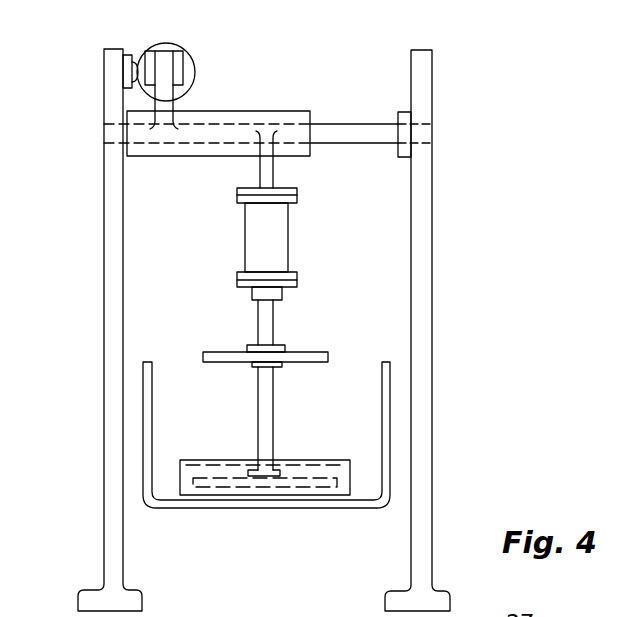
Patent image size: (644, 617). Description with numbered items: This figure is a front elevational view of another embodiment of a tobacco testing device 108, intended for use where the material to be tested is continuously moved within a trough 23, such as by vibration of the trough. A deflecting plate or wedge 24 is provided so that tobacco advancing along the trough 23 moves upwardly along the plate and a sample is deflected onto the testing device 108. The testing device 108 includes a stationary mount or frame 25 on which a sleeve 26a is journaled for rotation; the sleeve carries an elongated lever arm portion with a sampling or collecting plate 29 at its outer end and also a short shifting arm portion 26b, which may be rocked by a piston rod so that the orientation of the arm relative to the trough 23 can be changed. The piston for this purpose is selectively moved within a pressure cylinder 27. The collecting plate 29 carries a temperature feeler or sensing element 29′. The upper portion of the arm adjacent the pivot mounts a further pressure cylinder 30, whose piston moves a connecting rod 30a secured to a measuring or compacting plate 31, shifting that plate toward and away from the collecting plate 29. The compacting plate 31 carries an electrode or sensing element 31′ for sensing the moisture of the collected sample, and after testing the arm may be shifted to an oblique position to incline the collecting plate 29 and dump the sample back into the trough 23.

The trough 23 is at (147, 395).
The deflecting plate 24 is at (215, 463).
The stationary mount 25 is at (110, 230).
The sleeve 26a is at (247, 113).
The shifting arm portion 26b is at (175, 103).
The pressure cylinder 27 is at (170, 48).
The collecting plate 29 is at (314, 515).
The temperature feeler 29' is at (405, 419).
The pressure cylinder 30 is at (275, 232).
The connecting rod 30a is at (260, 319).
The compacting plate 31 is at (282, 333).
The electrode 31' is at (238, 385).
The testing device 108 is at (433, 238).